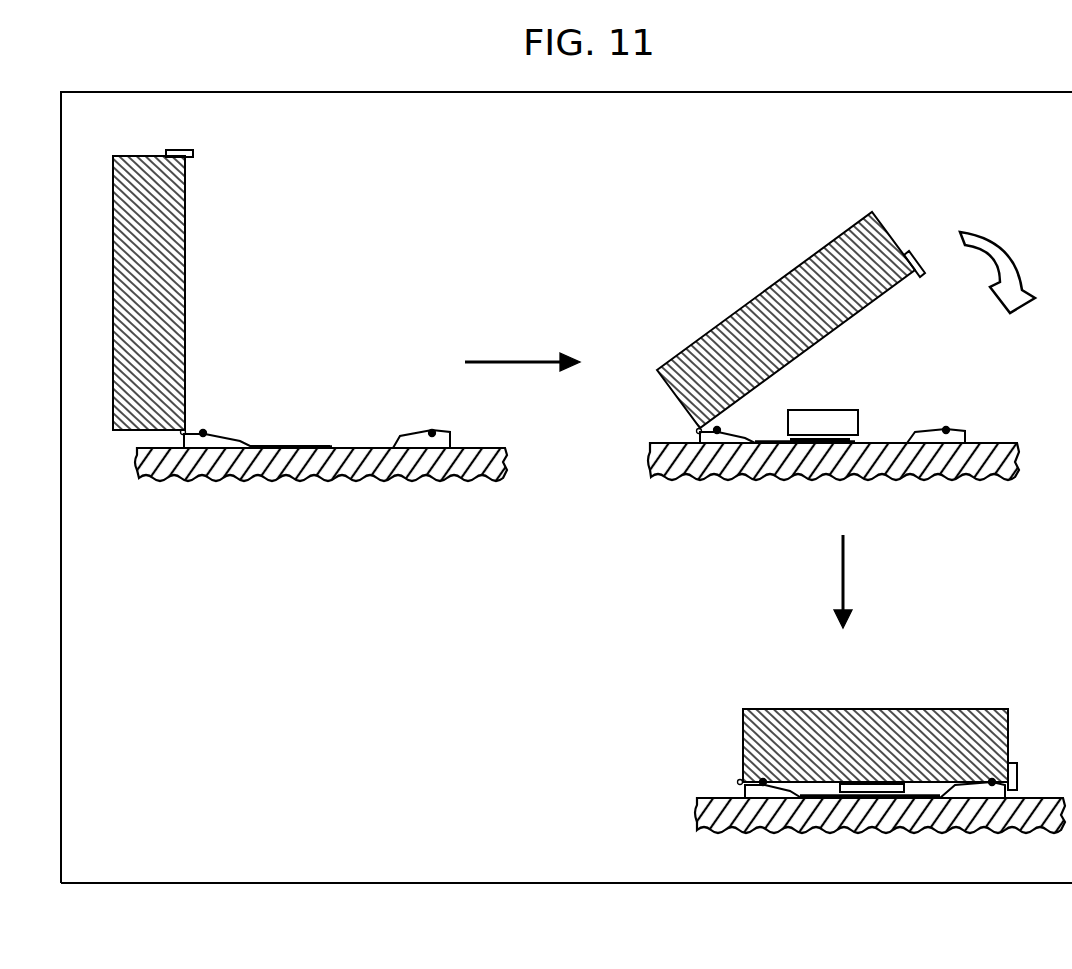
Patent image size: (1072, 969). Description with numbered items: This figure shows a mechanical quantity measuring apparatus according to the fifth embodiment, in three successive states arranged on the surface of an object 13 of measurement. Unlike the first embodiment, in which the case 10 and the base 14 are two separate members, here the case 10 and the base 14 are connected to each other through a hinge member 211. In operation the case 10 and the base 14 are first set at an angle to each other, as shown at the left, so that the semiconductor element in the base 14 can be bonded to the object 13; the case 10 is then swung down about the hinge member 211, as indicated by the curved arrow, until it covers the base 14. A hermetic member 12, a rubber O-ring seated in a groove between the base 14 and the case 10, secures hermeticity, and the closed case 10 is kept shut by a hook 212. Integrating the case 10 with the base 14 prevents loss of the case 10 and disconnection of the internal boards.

The case 10 is at (168, 316).
The hermetic member 12 is at (946, 430).
The object of measurement 13 is at (315, 462).
The base 14 is at (422, 443).
The hinge member 211 is at (188, 430).
The hook 212 is at (193, 153).